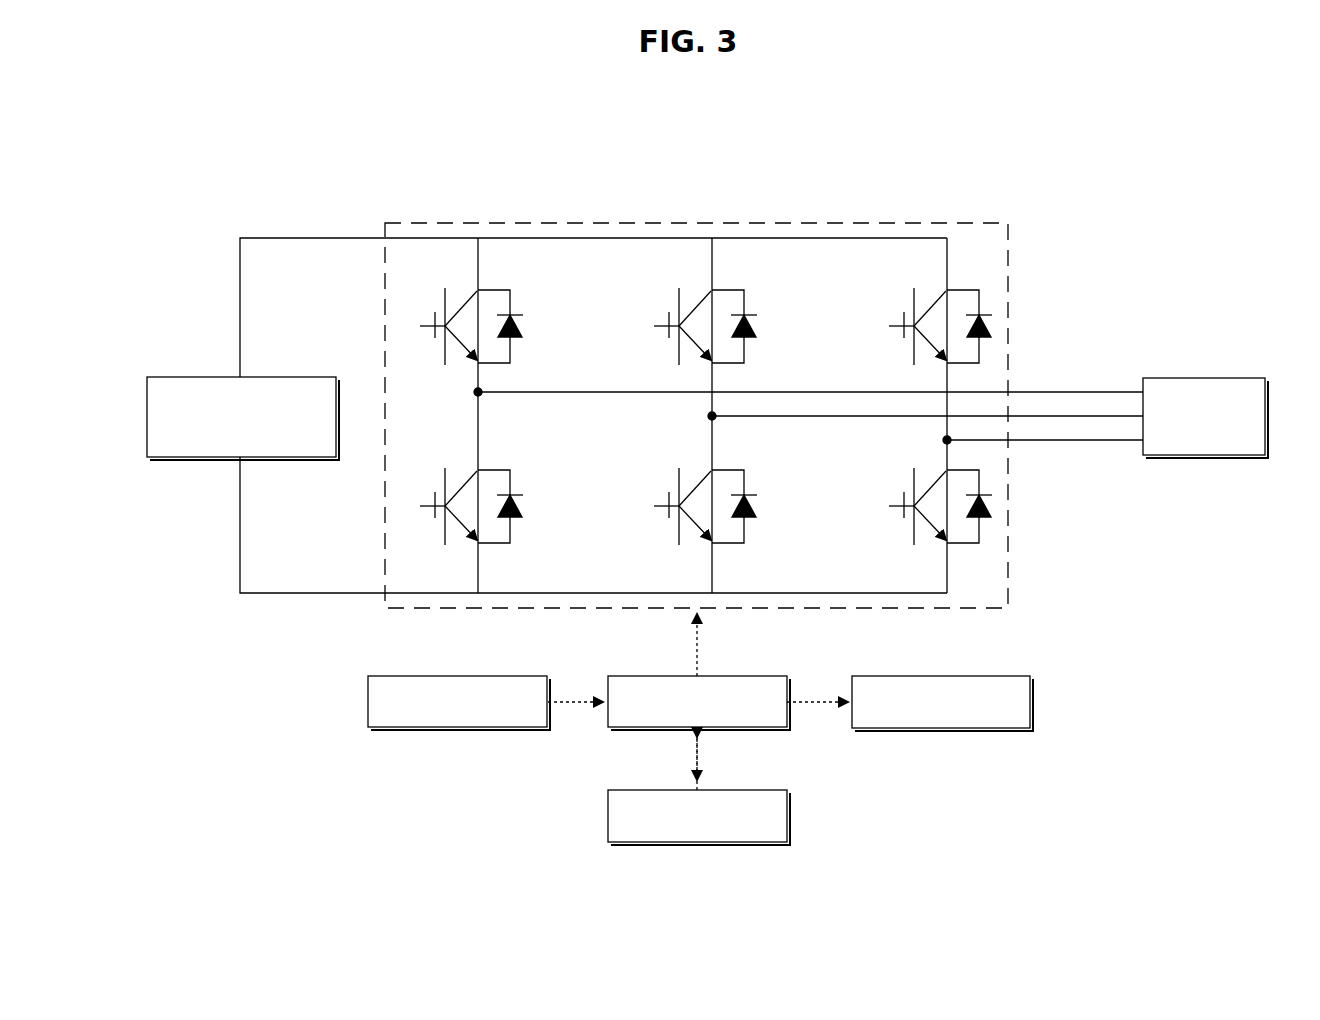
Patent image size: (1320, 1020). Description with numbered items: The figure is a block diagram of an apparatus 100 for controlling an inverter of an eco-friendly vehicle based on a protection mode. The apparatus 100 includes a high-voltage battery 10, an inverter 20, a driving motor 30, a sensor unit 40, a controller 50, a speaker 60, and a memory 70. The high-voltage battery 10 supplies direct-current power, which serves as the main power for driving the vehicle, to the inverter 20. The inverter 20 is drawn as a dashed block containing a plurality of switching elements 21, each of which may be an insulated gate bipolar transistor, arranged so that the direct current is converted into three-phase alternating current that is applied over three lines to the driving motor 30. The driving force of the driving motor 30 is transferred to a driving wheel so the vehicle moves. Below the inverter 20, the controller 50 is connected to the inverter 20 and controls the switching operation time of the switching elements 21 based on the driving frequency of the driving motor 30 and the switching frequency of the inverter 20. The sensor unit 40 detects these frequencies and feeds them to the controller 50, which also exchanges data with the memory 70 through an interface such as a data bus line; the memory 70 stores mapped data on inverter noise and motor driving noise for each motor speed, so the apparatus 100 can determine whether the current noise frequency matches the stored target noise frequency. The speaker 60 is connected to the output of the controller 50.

The apparatus for controlling an inverter 100 is at (175, 129).
The high-voltage battery 10 is at (172, 376).
The inverter 20 is at (983, 223).
The switching element 21 is at (982, 300).
The driving motor 30 is at (1230, 377).
The sensor unit 40 is at (500, 676).
The controller 50 is at (740, 676).
The speaker 60 is at (983, 676).
The memory 70 is at (740, 790).